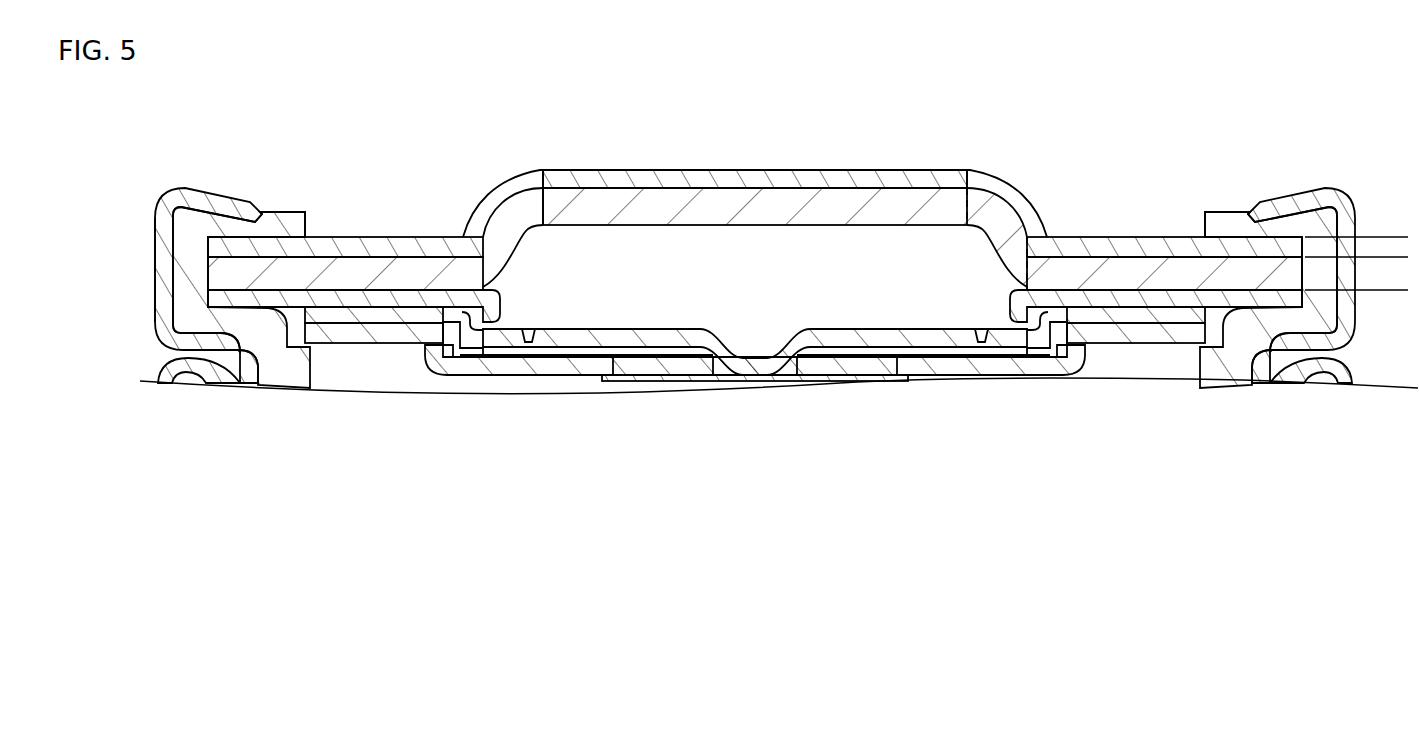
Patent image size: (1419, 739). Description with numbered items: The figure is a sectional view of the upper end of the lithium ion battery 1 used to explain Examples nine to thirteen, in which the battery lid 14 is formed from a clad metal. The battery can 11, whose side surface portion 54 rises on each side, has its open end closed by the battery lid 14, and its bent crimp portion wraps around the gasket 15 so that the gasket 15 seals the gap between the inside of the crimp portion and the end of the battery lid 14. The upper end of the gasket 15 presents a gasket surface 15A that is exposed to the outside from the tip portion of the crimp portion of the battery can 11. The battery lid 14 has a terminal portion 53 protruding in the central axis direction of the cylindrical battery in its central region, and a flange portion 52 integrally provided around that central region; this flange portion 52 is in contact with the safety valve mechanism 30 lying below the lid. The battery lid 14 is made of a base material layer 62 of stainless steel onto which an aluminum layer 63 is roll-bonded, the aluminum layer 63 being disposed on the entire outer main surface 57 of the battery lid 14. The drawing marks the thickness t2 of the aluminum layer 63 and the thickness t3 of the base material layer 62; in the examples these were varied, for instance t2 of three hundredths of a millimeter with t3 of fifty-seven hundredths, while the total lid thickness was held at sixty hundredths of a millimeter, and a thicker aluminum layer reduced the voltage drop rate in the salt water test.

The lithium ion battery 1 is at (590, 91).
The battery can 11 is at (156, 321).
The battery lid 14 is at (755, 204).
The gasket 15 is at (190, 293).
The gasket surface 15A is at (284, 211).
The safety valve mechanism 30 is at (756, 330).
The flange portion 52 is at (390, 258).
The terminal portion 53 is at (680, 190).
The side surface portion of battery can 54 is at (155, 256).
The main surface 57 is at (838, 178).
The base material layer 62 is at (890, 205).
The aluminum layer 63 is at (940, 178).
The thickness of aluminum layer t2 is at (1372, 212).
The thickness of base material layer t3 is at (1372, 264).